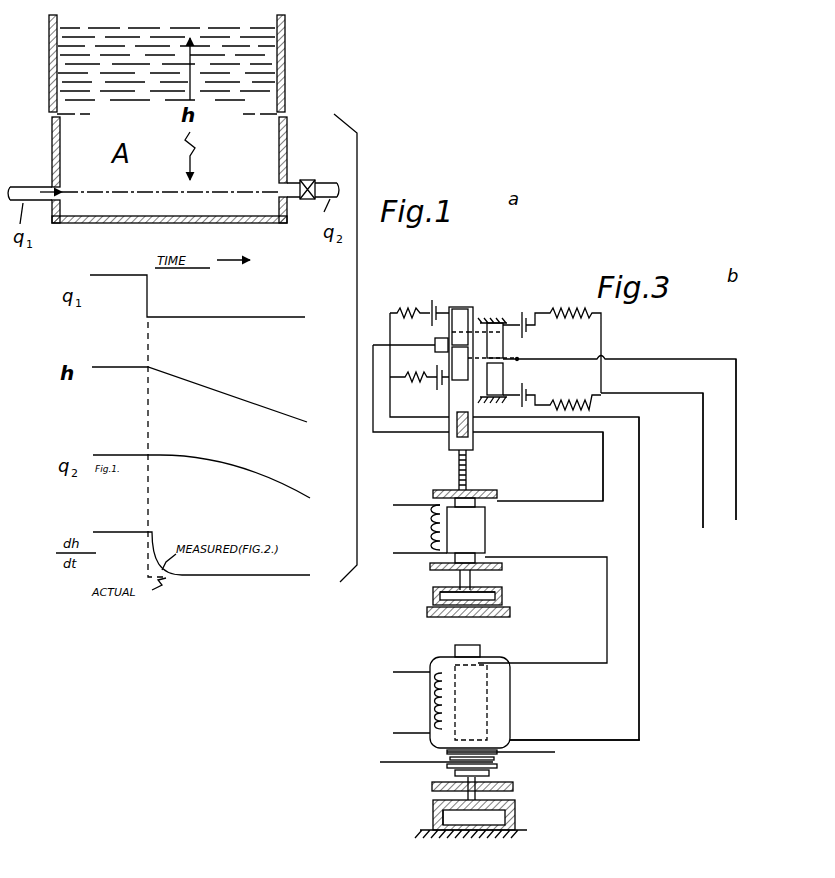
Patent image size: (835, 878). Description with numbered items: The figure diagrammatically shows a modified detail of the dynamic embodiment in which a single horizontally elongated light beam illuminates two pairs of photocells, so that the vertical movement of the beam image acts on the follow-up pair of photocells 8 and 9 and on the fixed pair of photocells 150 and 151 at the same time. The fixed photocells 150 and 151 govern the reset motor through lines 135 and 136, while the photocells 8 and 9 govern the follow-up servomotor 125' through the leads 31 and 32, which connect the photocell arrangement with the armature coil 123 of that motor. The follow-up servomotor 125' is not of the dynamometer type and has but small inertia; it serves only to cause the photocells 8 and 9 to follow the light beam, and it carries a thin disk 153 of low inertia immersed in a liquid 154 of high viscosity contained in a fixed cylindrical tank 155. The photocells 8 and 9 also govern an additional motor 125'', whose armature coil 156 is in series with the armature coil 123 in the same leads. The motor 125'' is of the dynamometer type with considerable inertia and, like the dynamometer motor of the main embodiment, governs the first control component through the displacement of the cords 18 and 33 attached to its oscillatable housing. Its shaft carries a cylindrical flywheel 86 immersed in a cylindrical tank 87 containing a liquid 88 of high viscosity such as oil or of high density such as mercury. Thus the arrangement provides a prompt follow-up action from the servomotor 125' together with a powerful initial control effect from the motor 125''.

The photocell 8 is at (460, 306).
The photocell 9 is at (458, 372).
The photocell 150 is at (496, 322).
The photocell 151 is at (497, 390).
The lead 31 is at (603, 466).
The lead 32 is at (645, 474).
The line 135 is at (703, 514).
The line 136 is at (736, 510).
The follow-up servomotor 125' is at (445, 475).
The armature coil 123 is at (477, 527).
The thin disk 153 is at (475, 590).
The liquid of high viscosity 154 is at (440, 594).
The fixed cylindrical tank 155 is at (427, 612).
The additional motor 125'' is at (439, 650).
The armature coil 156 is at (487, 702).
The cord 33 is at (538, 755).
The cord 18 is at (422, 764).
The cylindrical tank 87 is at (518, 815).
The liquid 88 is at (436, 822).
The cylindrical flywheel 86 is at (478, 835).